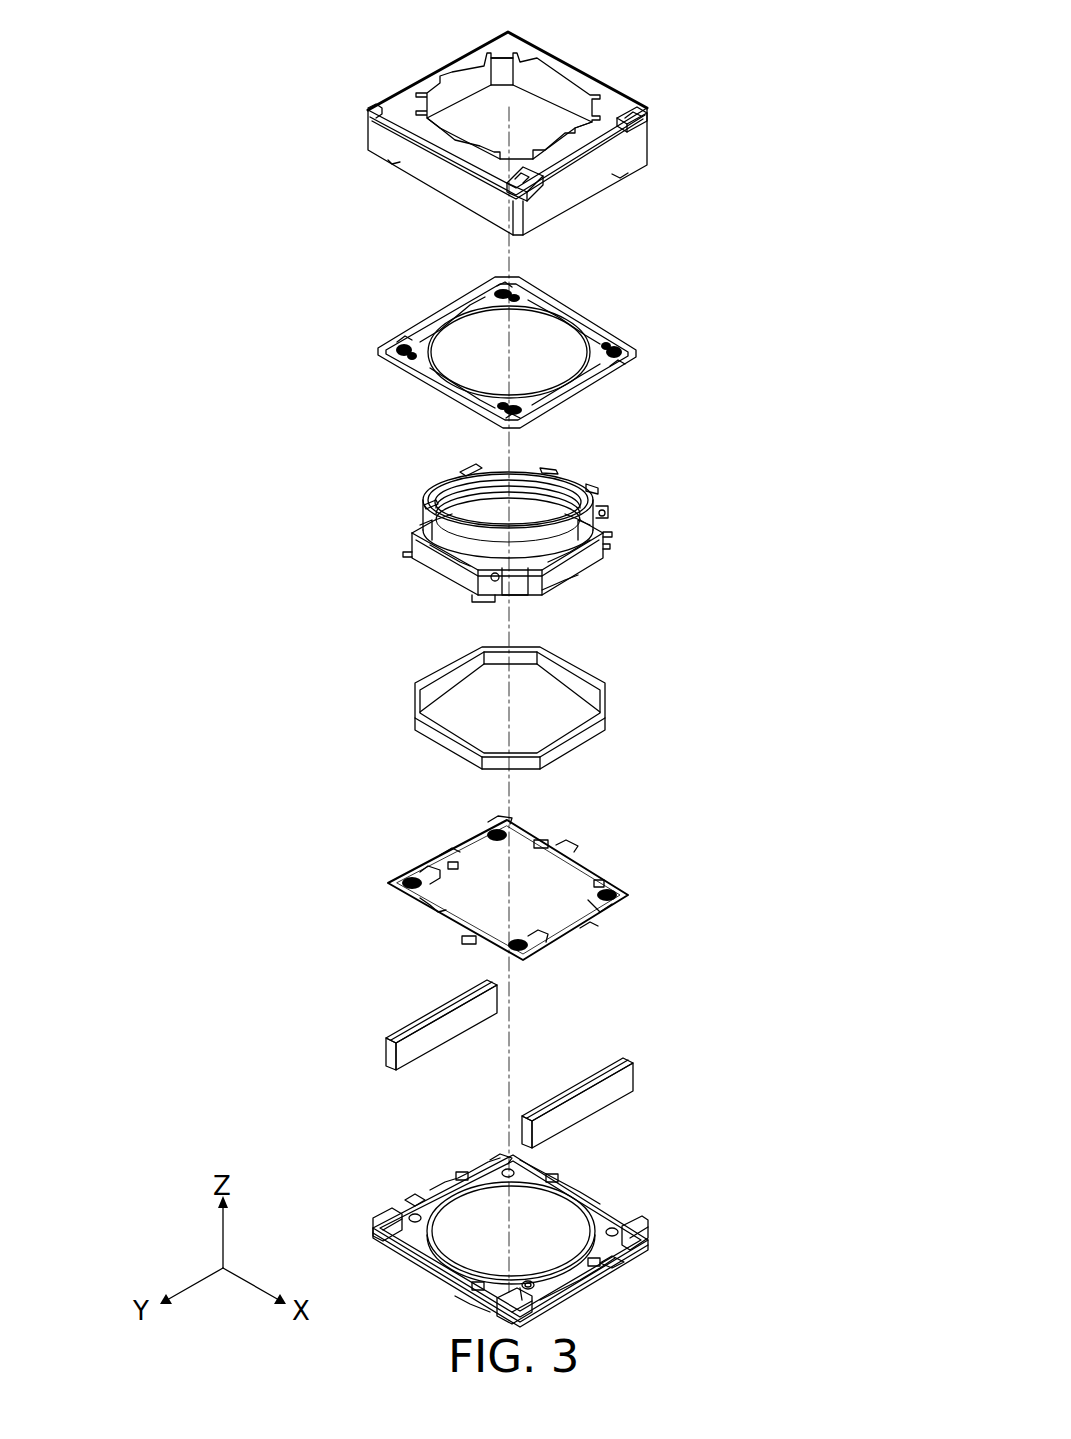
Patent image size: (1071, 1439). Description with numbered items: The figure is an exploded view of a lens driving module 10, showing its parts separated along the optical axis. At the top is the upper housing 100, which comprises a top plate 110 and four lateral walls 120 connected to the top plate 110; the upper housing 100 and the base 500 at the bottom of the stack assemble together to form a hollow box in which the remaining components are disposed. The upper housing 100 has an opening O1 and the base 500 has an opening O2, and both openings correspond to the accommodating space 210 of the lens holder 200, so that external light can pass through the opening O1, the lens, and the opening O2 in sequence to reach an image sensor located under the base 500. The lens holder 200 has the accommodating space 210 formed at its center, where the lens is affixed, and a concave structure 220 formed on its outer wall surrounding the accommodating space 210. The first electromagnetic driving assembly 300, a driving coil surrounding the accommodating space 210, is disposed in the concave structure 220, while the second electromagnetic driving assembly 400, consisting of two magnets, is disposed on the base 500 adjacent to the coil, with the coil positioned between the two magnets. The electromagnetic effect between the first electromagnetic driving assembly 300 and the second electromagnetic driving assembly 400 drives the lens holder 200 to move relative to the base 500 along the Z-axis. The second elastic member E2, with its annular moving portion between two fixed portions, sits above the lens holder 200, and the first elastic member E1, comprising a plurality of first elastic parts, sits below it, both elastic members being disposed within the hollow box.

The lens driving module 10 is at (797, 40).
The upper housing 100 is at (657, 140).
The top plate 110 is at (605, 93).
The lateral walls 120 is at (450, 178).
The opening O1 is at (473, 118).
The second elastic member E2 is at (652, 355).
The lens holder 200 is at (618, 517).
The accommodating space 210 is at (467, 537).
The concave structure 220 is at (455, 570).
The first electromagnetic driving assembly 300 is at (617, 703).
The first elastic member E1 is at (645, 893).
The second electromagnetic driving assembly 400 is at (420, 1018).
The opening O2 is at (472, 1222).
The base 500 is at (662, 1240).